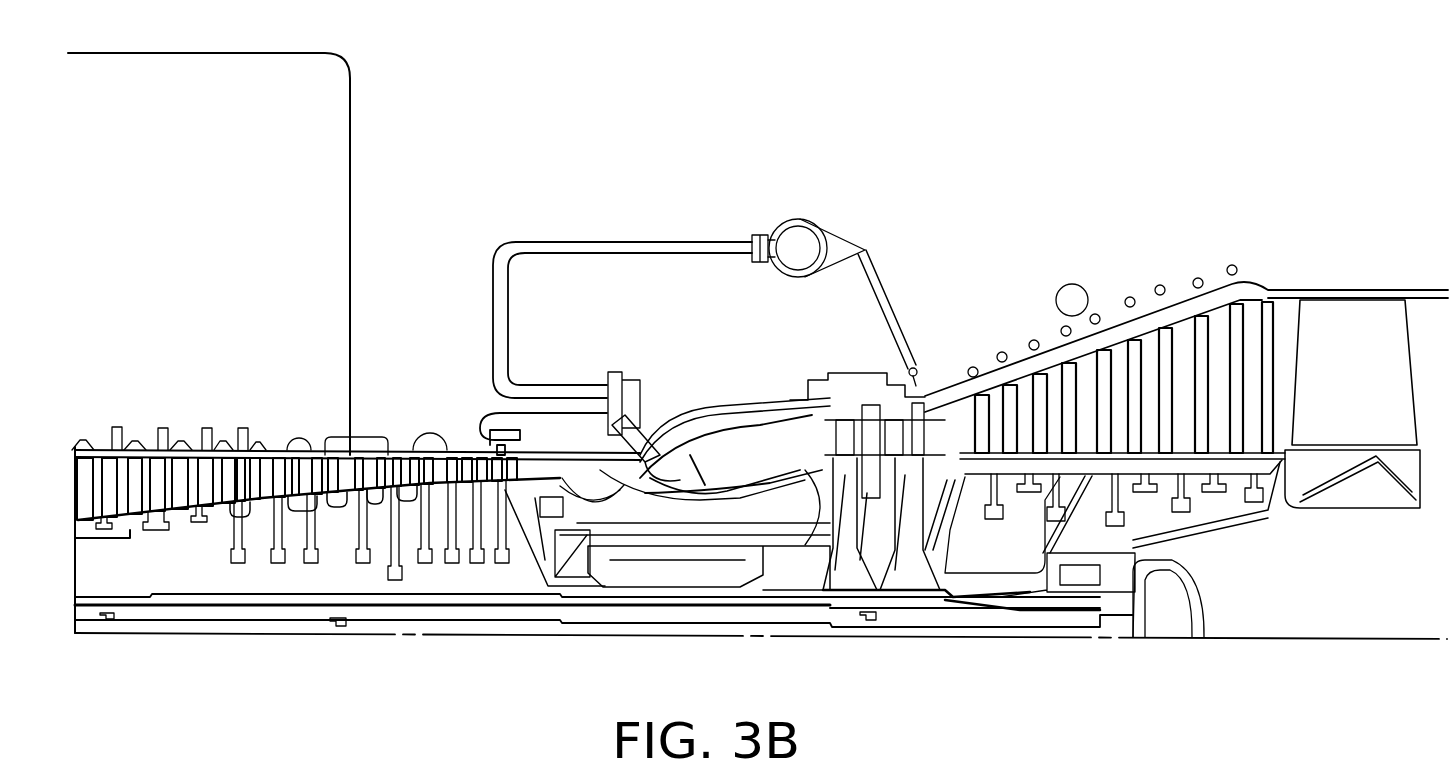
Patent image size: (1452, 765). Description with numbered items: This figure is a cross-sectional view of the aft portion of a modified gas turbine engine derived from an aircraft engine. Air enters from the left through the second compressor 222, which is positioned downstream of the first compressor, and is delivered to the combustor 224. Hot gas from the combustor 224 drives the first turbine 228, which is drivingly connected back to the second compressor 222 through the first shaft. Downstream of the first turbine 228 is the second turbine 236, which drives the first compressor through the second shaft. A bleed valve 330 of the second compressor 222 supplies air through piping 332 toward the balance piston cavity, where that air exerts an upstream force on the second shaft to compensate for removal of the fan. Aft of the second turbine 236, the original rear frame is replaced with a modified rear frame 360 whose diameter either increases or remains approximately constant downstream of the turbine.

The second compressor 222 is at (356, 489).
The combustor 224 is at (730, 455).
The first turbine 228 is at (938, 657).
The second turbine 236 is at (1186, 467).
The bleed valve 330 is at (350, 468).
The piping 332 is at (350, 118).
The modified rear frame 360 is at (1357, 327).